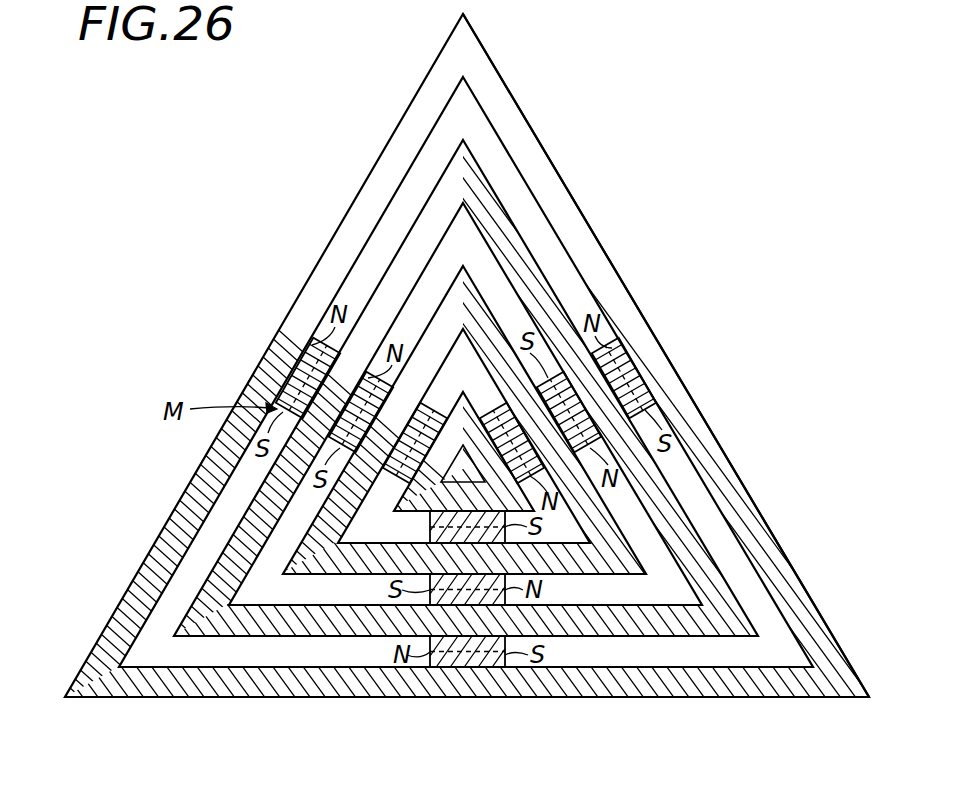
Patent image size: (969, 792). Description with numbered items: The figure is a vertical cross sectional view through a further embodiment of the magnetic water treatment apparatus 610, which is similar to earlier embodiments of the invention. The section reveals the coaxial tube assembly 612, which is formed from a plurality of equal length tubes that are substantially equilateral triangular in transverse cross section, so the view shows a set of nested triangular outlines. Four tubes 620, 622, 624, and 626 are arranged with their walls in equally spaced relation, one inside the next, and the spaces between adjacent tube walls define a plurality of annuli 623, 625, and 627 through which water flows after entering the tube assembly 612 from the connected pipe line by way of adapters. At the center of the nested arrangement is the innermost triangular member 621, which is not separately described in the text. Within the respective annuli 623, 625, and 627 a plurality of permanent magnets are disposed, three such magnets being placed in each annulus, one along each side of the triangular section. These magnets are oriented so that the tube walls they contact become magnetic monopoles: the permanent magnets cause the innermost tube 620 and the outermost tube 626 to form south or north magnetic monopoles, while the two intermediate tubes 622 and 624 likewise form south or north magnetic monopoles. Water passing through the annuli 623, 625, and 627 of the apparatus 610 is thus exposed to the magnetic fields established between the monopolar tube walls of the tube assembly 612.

The magnetic water treatment apparatus 610 is at (345, 135).
The coaxial tube assembly 612 is at (518, 100).
The tube 620 is at (405, 497).
The innermost triangular core 621 is at (450, 437).
The tube 622 is at (345, 572).
The annulus 623 is at (556, 548).
The tube 624 is at (265, 492).
The annulus 625 is at (287, 532).
The tube 626 is at (125, 605).
The annulus 627 is at (192, 574).